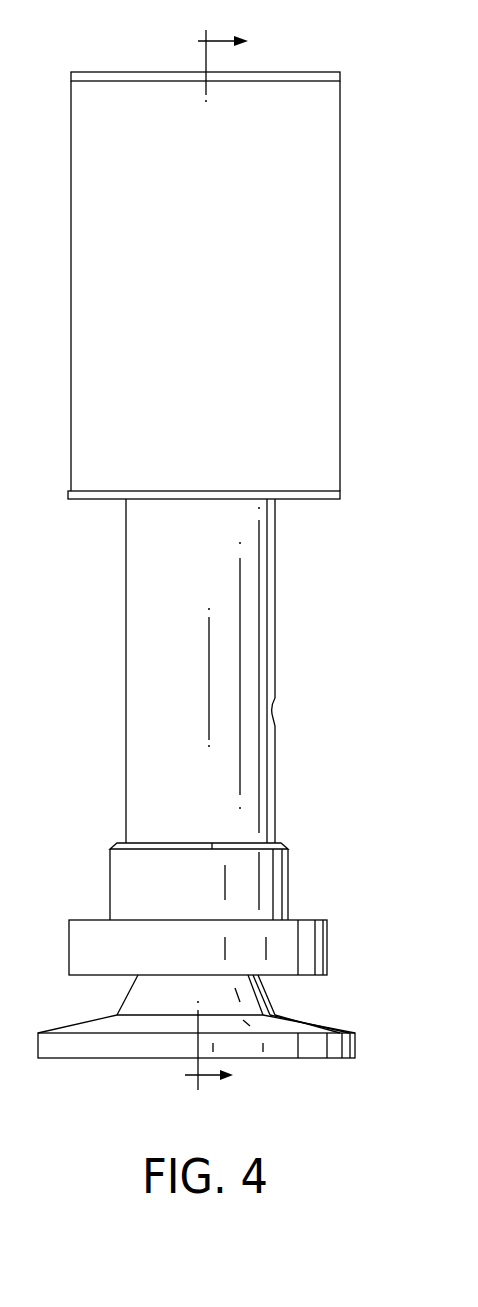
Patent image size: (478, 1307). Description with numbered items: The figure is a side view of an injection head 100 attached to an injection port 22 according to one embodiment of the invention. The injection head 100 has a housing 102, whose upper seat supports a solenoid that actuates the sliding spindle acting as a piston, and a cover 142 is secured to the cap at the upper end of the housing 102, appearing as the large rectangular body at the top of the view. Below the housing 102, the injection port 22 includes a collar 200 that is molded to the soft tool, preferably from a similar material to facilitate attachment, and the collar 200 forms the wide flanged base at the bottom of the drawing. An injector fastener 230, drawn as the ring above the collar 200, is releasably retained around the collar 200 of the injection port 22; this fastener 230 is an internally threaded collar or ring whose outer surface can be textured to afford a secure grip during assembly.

The injection head 100 is at (368, 175).
The cover 142 is at (323, 291).
The housing 102 is at (276, 603).
The injector fastener 230 is at (327, 937).
The injection port 22 is at (340, 1006).
The collar 200 is at (127, 1050).